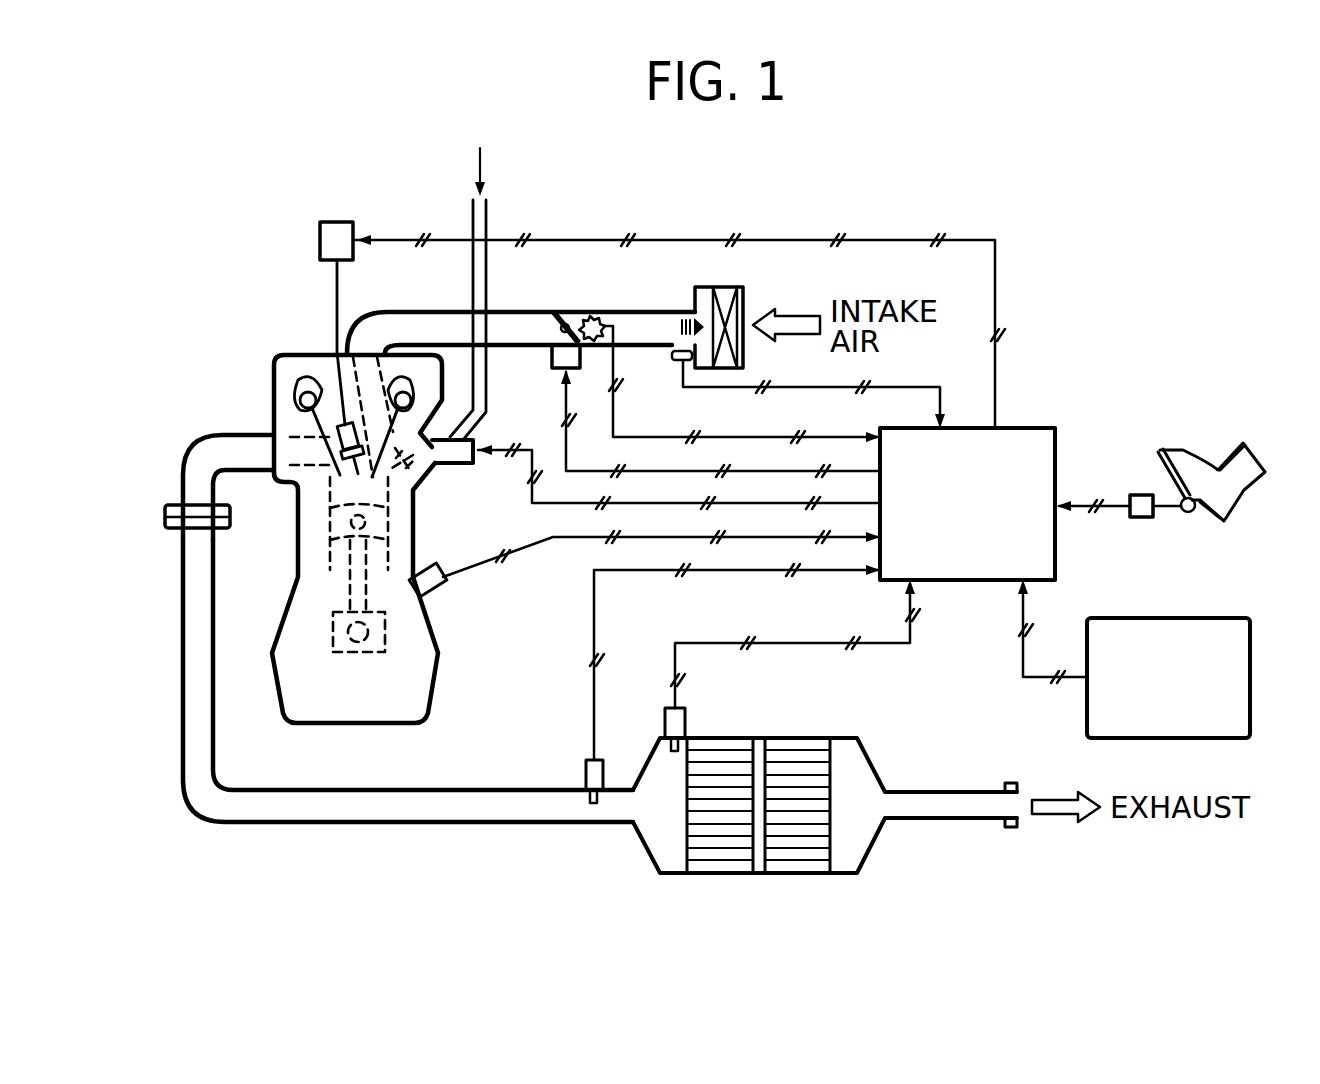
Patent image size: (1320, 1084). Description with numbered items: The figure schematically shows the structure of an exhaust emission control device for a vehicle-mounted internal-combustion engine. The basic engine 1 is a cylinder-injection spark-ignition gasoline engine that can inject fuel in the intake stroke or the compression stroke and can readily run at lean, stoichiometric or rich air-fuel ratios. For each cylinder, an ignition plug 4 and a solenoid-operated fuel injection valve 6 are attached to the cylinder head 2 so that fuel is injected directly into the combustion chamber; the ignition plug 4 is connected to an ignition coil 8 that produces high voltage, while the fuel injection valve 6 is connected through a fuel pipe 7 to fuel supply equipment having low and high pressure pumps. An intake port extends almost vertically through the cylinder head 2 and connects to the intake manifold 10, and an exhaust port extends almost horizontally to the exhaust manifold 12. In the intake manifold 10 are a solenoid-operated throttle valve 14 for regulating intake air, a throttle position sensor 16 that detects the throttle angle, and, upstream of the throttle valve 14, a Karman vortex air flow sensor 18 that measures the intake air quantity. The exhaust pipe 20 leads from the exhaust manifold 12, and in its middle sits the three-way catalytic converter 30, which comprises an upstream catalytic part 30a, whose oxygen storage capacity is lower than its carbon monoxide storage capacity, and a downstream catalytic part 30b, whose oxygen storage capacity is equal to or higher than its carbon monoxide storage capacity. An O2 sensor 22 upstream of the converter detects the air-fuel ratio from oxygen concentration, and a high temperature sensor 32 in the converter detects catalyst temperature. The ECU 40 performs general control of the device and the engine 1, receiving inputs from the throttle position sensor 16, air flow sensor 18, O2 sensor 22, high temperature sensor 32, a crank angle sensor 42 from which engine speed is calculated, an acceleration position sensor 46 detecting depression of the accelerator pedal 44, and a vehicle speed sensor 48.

The engine 1 is at (268, 348).
The cylinder head 2 is at (306, 353).
The ignition plug 4 is at (333, 430).
The fuel injection valve 6 is at (452, 468).
The fuel pipe 7 is at (490, 206).
The ignition coil 8 is at (334, 220).
The intake manifold 10 is at (424, 310).
The exhaust manifold 12 is at (182, 466).
The throttle valve 14 is at (565, 310).
The throttle position sensor 16 is at (600, 306).
The air flow sensor 18 is at (682, 362).
The exhaust pipe 20 is at (328, 824).
The O2 sensor 22 is at (604, 760).
The three-way catalytic converter 30 is at (825, 791).
The upstream catalytic part 30a is at (706, 875).
The downstream catalytic part 30b is at (795, 875).
The high temperature sensor 32 is at (688, 716).
The ECU 40 is at (1032, 426).
The crank angle sensor 42 is at (440, 592).
The accelerator pedal 44 is at (1160, 465).
The acceleration position sensor 46 is at (1140, 519).
The vehicle speed sensor 48 is at (1216, 616).